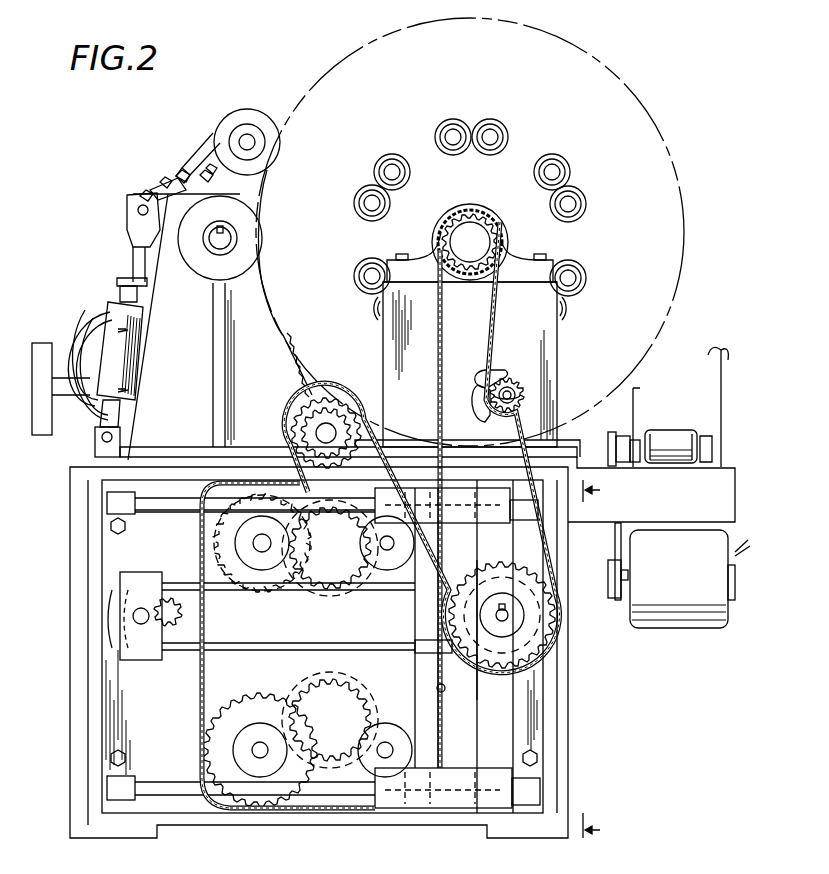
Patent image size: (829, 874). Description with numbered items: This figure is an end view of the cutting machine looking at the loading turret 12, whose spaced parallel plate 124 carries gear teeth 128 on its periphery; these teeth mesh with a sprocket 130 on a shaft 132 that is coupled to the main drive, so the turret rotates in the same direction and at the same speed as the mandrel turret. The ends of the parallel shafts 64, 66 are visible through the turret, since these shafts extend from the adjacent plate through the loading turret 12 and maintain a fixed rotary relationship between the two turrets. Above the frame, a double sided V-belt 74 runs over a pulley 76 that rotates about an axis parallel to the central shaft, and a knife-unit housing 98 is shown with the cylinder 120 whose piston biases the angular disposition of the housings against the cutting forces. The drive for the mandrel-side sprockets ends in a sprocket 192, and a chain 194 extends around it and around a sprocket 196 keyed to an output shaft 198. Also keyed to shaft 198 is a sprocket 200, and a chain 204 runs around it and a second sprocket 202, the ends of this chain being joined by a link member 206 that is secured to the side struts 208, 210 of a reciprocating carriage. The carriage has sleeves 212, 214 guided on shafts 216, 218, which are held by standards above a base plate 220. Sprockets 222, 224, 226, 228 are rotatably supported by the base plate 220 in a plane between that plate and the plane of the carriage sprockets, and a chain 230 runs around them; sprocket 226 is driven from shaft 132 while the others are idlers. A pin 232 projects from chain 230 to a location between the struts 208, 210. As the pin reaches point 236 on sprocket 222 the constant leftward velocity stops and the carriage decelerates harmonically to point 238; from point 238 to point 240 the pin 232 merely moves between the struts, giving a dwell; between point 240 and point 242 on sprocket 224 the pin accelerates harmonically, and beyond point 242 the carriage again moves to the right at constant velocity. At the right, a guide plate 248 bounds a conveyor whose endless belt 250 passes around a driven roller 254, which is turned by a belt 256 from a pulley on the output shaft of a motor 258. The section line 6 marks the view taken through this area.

The loading turret 12 is at (623, 72).
The plate 124 is at (622, 106).
The shaft 64 is at (452, 132).
The shaft 66 is at (493, 133).
The pulley 76 is at (250, 108).
The double sided V-belt 74 is at (200, 133).
The housing 98 is at (168, 190).
The sprocket 192 is at (487, 222).
The chain 194 is at (497, 306).
The teeth 128 is at (300, 358).
The sprocket 130 is at (336, 405).
The shaft 132 is at (318, 428).
The point 236 is at (262, 480).
The cylinder 120 is at (104, 360).
The guide plate 248 is at (712, 364).
The endless belt 250 is at (672, 436).
The driven roller 254 is at (708, 440).
The section line 6 is at (600, 660).
The shaft 216 is at (168, 510).
The point 238 is at (198, 546).
The second sprocket 202 is at (168, 600).
The sleeve 212 is at (485, 520).
The belt 256 is at (612, 560).
The sprocket 222 is at (272, 600).
The pin 232 is at (330, 590).
The sprocket 226 is at (382, 550).
The side strut 208 is at (412, 628).
The shaft 198 is at (508, 614).
The sprocket 196 is at (555, 640).
The chain 204 is at (308, 652).
The link member 206 is at (412, 655).
The sprocket 224 is at (268, 700).
The sprocket 228 is at (361, 733).
The sprocket 200 is at (490, 670).
The side strut 210 is at (463, 720).
The motor 258 is at (693, 618).
The base plate 220 is at (145, 708).
The point 240 is at (198, 745).
The shaft 218 is at (185, 790).
The point 242 is at (258, 814).
The chain 230 is at (318, 814).
The sleeve 214 is at (462, 790).